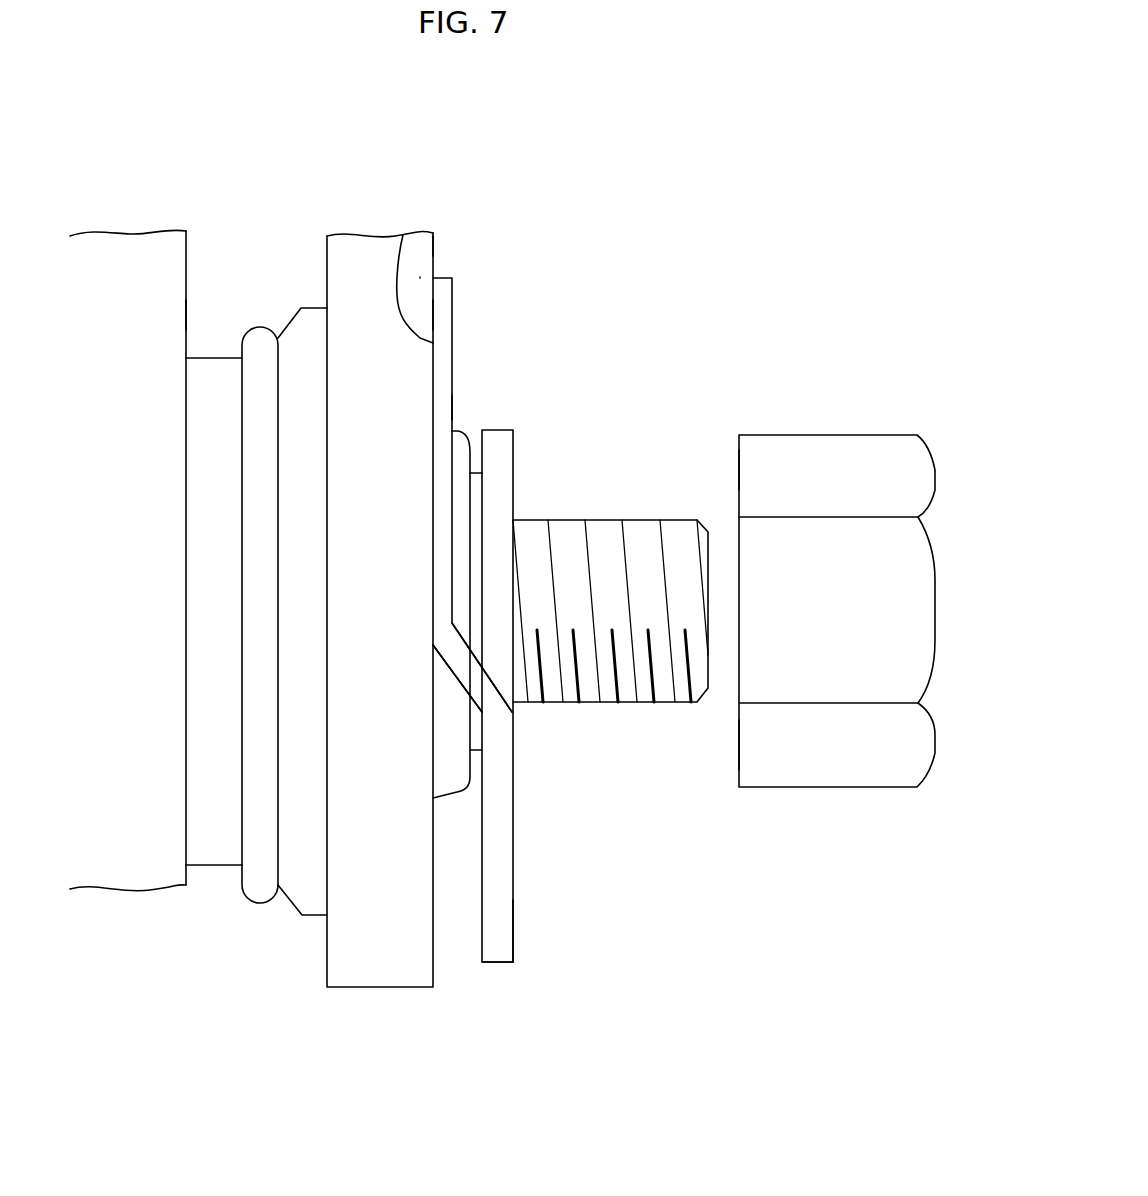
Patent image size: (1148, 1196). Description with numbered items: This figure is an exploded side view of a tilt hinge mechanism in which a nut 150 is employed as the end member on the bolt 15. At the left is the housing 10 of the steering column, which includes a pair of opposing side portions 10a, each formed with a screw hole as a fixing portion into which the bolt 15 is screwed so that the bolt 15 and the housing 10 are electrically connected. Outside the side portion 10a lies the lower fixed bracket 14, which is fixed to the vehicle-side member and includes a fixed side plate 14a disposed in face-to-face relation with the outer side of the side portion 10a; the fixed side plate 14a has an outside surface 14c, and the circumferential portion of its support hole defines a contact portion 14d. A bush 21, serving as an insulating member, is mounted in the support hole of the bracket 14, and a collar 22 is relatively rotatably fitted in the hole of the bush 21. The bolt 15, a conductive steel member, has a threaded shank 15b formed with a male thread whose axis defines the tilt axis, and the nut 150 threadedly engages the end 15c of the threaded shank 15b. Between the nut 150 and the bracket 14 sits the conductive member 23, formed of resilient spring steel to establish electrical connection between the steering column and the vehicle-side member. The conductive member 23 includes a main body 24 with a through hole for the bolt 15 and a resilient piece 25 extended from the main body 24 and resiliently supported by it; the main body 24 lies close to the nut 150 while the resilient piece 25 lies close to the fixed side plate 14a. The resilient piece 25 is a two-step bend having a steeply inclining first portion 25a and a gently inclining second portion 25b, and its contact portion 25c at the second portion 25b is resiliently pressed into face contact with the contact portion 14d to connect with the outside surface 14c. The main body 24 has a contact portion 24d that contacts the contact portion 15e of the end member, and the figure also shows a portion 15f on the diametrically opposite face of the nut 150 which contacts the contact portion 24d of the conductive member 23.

The housing 10 is at (193, 262).
The side portion 10a is at (175, 315).
The lower fixed bracket 14 is at (435, 242).
The fixed side plate 14a is at (420, 277).
The outside surface of the fixed side plate 14c is at (437, 250).
The contact portion 14d is at (433, 315).
The bolt 15 is at (680, 358).
The threaded shank 15b is at (572, 528).
The end of the threaded shank 15c is at (625, 692).
The contact portion 15e is at (739, 469).
The portion on the diametrically opposite face of the nut 15f is at (739, 747).
The nut 150 is at (823, 445).
The bush 21 is at (292, 888).
The collar 22 is at (215, 853).
The conductive member 23 is at (497, 962).
The main body 24 is at (513, 858).
The contact portion 24d is at (513, 927).
The resilient piece 25 is at (453, 353).
The first portion 25a is at (478, 682).
The second portion 25b is at (438, 408).
The contact portion 25c is at (403, 235).